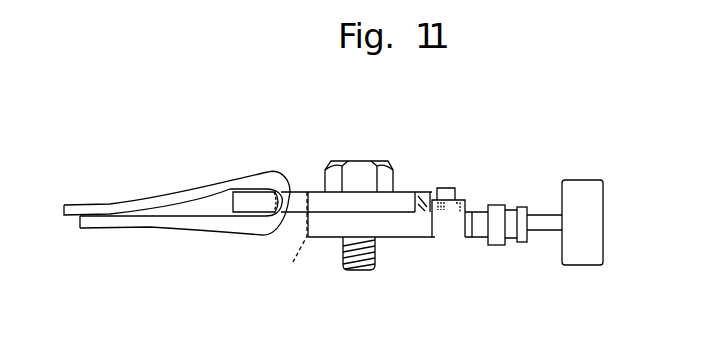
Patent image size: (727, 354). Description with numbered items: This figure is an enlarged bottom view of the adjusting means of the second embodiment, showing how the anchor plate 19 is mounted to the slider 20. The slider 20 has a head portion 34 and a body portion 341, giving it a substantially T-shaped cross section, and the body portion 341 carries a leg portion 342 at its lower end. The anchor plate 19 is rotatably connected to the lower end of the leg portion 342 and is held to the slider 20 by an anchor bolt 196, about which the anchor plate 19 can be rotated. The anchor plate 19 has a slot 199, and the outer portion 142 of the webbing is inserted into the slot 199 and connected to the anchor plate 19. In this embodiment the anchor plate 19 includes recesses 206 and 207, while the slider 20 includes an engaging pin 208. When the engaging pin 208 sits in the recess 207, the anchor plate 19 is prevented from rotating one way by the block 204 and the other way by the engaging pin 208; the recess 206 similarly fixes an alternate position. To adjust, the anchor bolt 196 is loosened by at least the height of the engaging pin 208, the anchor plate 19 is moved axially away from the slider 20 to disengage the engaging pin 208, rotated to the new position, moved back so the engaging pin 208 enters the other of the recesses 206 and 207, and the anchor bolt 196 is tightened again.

The outer portion of the webbing 142 is at (165, 193).
The anchor plate 19 is at (316, 192).
The slot 199 is at (284, 241).
The anchor bolt 196 is at (355, 160).
The slider 20 is at (420, 238).
The leg portion 342 is at (397, 229).
The recess 206 is at (435, 190).
The recess 207 is at (422, 190).
The engaging pin 208 is at (452, 187).
The block 204 is at (448, 230).
The body portion 341 is at (542, 214).
The head portion 34 is at (590, 184).